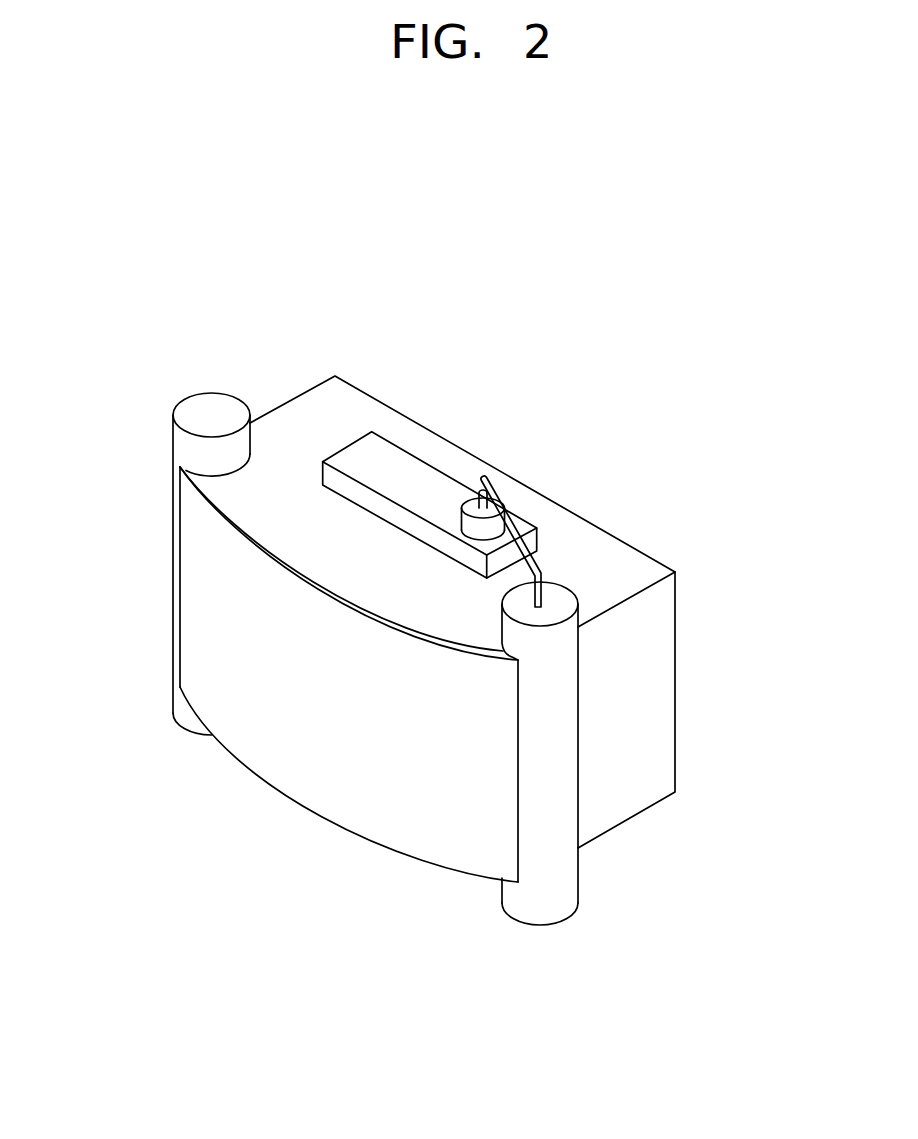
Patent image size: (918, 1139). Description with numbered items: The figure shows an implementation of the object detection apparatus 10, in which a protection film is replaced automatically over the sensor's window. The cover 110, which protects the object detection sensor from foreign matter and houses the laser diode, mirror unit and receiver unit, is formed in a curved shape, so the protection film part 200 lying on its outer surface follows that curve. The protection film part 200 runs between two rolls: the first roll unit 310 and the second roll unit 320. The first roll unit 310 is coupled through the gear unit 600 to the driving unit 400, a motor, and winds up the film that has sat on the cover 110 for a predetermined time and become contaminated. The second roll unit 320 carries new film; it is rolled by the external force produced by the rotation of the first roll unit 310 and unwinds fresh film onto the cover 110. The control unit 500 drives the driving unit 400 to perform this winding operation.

The object detection apparatus 10 is at (422, 563).
The cover 110 is at (349, 711).
The protection film part 200 is at (395, 802).
The first roll unit 310 is at (540, 643).
The second roll unit 320 is at (188, 447).
The driving unit 400 is at (478, 497).
The control unit 500 is at (382, 468).
The gear unit 600 is at (541, 563).